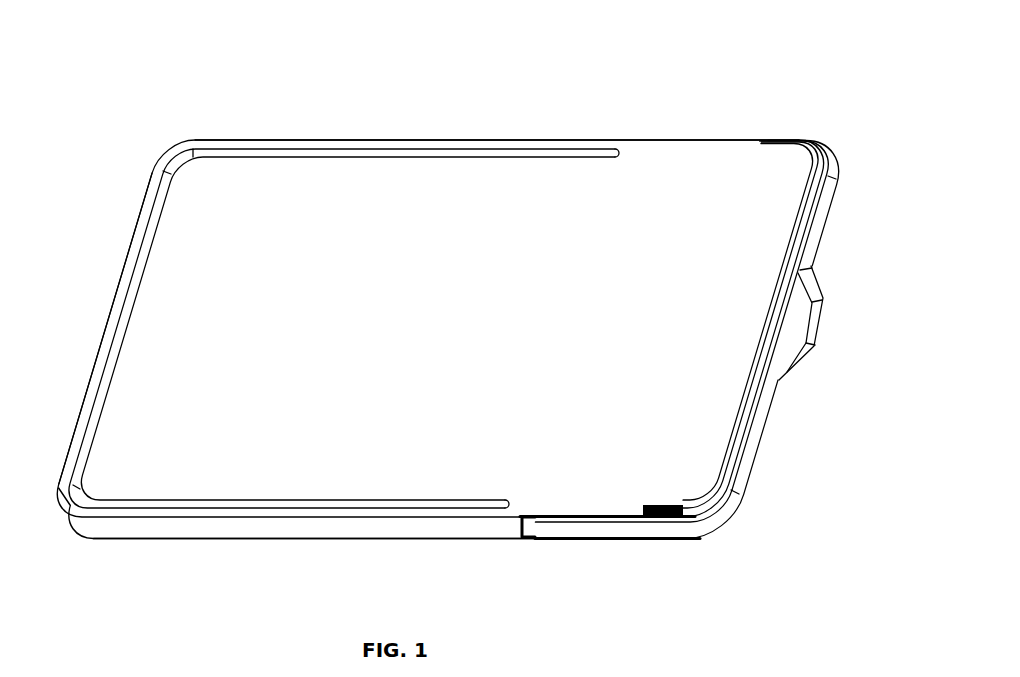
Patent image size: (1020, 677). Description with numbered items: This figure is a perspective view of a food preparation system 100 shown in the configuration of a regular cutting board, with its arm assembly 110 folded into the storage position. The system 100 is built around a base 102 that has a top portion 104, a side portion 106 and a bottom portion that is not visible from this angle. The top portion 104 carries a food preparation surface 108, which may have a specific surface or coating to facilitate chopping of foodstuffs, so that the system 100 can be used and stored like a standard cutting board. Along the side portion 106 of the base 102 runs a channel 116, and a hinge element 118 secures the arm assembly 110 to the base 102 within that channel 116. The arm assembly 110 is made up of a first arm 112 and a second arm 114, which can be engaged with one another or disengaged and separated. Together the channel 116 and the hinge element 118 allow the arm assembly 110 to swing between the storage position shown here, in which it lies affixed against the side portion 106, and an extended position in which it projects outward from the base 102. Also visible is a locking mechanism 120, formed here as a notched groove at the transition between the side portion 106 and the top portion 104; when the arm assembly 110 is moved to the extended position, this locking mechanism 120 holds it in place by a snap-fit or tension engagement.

The food preparation system 100 is at (222, 80).
The base 102 is at (95, 347).
The top portion 104 is at (185, 232).
The side portion 106 is at (158, 528).
The food preparation surface 108 is at (644, 223).
The arm assembly 110 is at (778, 440).
The first arm 112 is at (823, 233).
The second arm 114 is at (790, 362).
The channel 116 is at (597, 545).
The hinge element 118 is at (533, 535).
The locking mechanism 120 is at (663, 507).